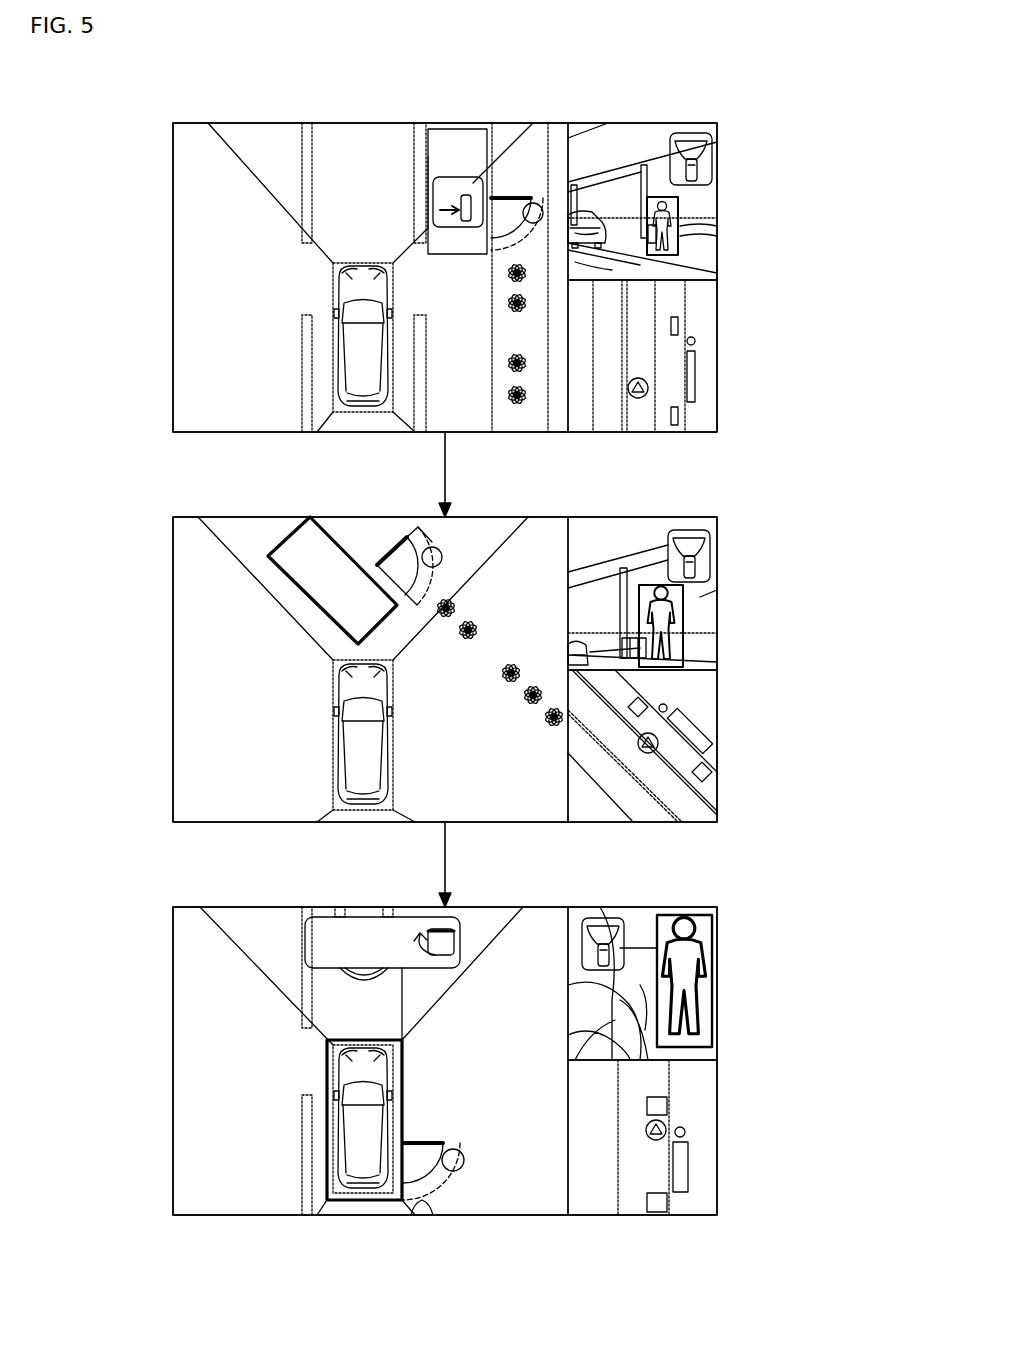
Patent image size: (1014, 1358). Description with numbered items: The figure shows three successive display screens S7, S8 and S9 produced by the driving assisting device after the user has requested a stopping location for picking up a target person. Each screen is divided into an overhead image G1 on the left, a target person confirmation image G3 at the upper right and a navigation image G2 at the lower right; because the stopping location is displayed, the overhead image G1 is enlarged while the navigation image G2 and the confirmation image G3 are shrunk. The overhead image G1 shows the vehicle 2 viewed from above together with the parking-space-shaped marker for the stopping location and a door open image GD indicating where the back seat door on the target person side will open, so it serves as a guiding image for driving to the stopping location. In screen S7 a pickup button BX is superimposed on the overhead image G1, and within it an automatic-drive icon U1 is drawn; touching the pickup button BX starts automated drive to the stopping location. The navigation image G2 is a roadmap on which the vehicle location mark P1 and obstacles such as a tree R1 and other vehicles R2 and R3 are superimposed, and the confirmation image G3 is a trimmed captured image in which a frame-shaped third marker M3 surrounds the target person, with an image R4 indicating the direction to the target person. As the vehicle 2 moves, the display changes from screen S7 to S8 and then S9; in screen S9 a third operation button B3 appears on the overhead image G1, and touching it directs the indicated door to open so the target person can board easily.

The screen S7 is at (162, 146).
The screen S8 is at (155, 544).
The screen S9 is at (155, 934).
The overhead image G1 is at (183, 290).
The navigation image G2 is at (713, 303).
The target person confirmation image G3 is at (656, 139).
The vehicle 2 is at (363, 263).
The door open image GD is at (507, 190).
The pickup button BX is at (461, 176).
The auto parking button U1 is at (458, 215).
The tree R1 is at (697, 376).
The other vehicle R2 is at (675, 317).
The other vehicle R3 is at (675, 407).
The image indicating the direction to the target person R4 is at (714, 171).
The third marker M3 is at (680, 226).
The vehicle location mark P1 is at (639, 378).
The third operation button B3 is at (320, 917).